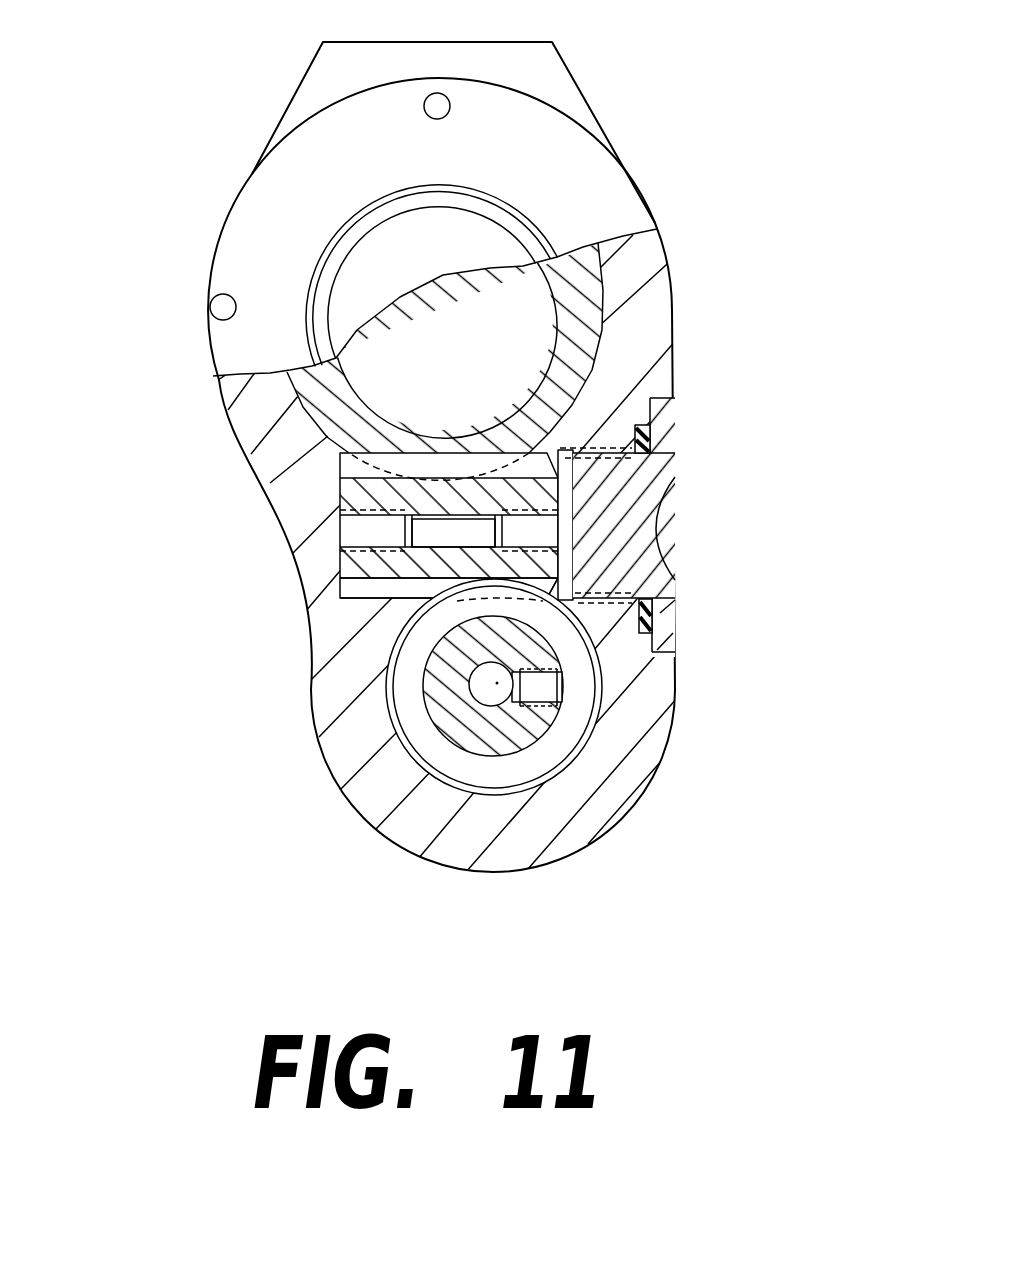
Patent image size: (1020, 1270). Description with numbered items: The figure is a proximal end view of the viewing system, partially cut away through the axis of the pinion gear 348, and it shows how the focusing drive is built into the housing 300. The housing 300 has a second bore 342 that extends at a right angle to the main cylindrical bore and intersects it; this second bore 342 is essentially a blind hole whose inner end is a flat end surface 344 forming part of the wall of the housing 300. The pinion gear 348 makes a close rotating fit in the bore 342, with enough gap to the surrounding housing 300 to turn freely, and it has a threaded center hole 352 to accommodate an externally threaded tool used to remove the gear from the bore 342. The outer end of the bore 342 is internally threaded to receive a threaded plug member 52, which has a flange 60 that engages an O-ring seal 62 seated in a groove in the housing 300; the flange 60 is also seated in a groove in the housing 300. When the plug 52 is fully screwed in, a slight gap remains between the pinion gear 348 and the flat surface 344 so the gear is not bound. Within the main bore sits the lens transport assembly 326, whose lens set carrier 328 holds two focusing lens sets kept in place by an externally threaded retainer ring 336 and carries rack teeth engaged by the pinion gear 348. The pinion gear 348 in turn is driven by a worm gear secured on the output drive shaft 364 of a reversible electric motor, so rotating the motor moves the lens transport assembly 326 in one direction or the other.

The housing 300 is at (212, 167).
The lens transport assembly 326 is at (611, 282).
The lens set carrier 328 is at (582, 327).
The flange 60 is at (658, 418).
The threaded center hole 352 is at (527, 528).
The threaded plug member 52 is at (692, 529).
The O-ring seal 62 is at (655, 614).
The pinion gear 348 is at (327, 496).
The flat end surface 344 is at (345, 537).
The second bore 342 is at (385, 598).
The retainer ring 336 is at (437, 650).
The output drive shaft 364 is at (482, 686).